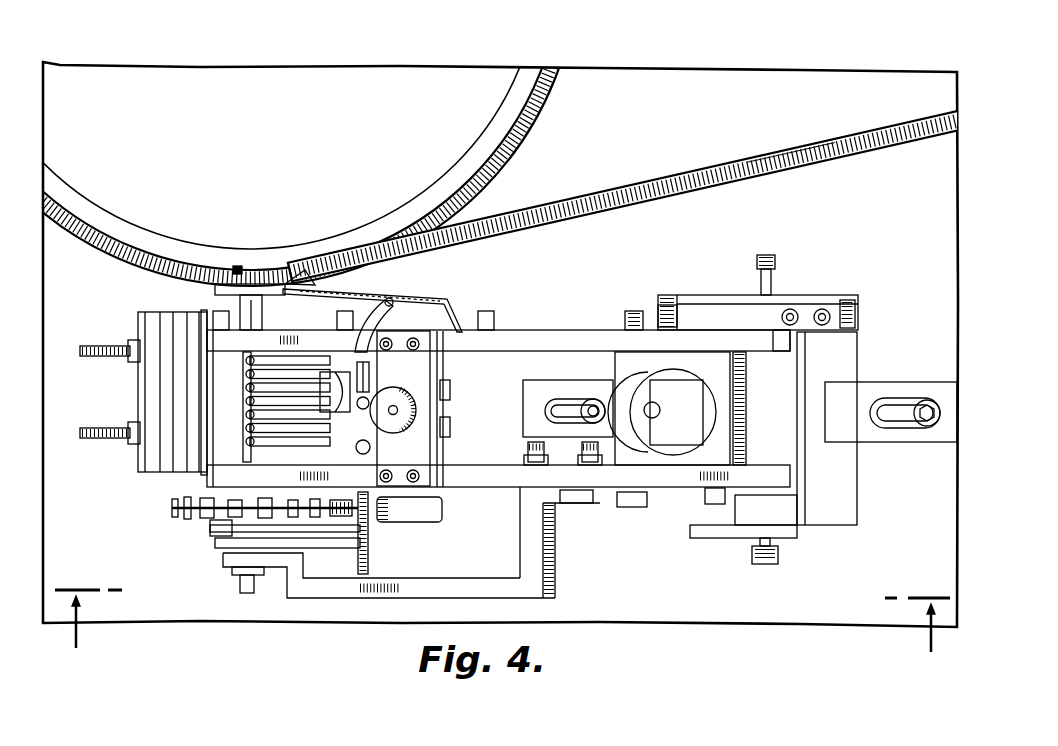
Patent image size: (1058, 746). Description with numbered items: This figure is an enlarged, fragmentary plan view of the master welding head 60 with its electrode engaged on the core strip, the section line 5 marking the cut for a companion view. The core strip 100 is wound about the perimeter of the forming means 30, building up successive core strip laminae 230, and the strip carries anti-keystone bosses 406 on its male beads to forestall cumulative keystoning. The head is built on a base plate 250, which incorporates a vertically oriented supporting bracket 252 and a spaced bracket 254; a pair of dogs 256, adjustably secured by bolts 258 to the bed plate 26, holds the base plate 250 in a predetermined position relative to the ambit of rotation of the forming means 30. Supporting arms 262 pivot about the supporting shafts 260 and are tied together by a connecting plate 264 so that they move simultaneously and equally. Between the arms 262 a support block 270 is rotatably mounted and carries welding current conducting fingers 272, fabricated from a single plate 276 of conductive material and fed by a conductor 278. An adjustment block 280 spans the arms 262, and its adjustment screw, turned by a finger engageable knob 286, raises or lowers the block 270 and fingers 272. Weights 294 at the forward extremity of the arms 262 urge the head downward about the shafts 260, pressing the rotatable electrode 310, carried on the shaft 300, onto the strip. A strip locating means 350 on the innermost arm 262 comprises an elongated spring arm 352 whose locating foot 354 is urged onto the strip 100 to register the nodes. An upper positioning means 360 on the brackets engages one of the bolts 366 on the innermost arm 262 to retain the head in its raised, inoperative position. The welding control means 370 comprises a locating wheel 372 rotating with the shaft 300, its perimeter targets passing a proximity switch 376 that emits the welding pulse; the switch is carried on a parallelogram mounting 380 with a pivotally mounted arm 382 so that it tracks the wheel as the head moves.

The forming means 30 is at (494, 104).
The core strip laminae 230 is at (548, 112).
The core strip 100 is at (822, 135).
The anti-keystone bosses 406 is at (782, 163).
The rotatable electrode 310 is at (238, 265).
The locating foot 354 is at (302, 266).
The shaft 300 is at (258, 326).
The supporting arms 262 is at (575, 336).
The weights 294 is at (178, 330).
The welding current conducting fingers 272 is at (243, 362).
The adjustment block 280 is at (415, 366).
The finger engageable knob 286 is at (410, 410).
The elongated arm 352 is at (470, 306).
The conductor 278 is at (455, 298).
The strip locating means 350 is at (371, 286).
The support block 270 is at (448, 392).
The single plate 276 is at (370, 440).
The dogs 256 is at (940, 394).
The bolts 258 is at (590, 400).
The connecting plate 264 is at (640, 467).
The bracket 254 is at (806, 293).
The upper positioning means 360 is at (660, 296).
The bolts 366 is at (640, 310).
The supporting shafts 260 is at (756, 275).
The base plate 250 is at (836, 354).
The supporting bracket 252 is at (787, 508).
The master welding head 60 is at (760, 563).
The welding control means 370 is at (164, 519).
The locating wheel 372 is at (208, 528).
The proximity switch 376 is at (375, 530).
The parallelogram mounting 380 is at (568, 580).
The pivotally mounted arm 382 is at (372, 596).
The bed plate 26 is at (885, 561).
The section line 5- 5 is at (502, 635).